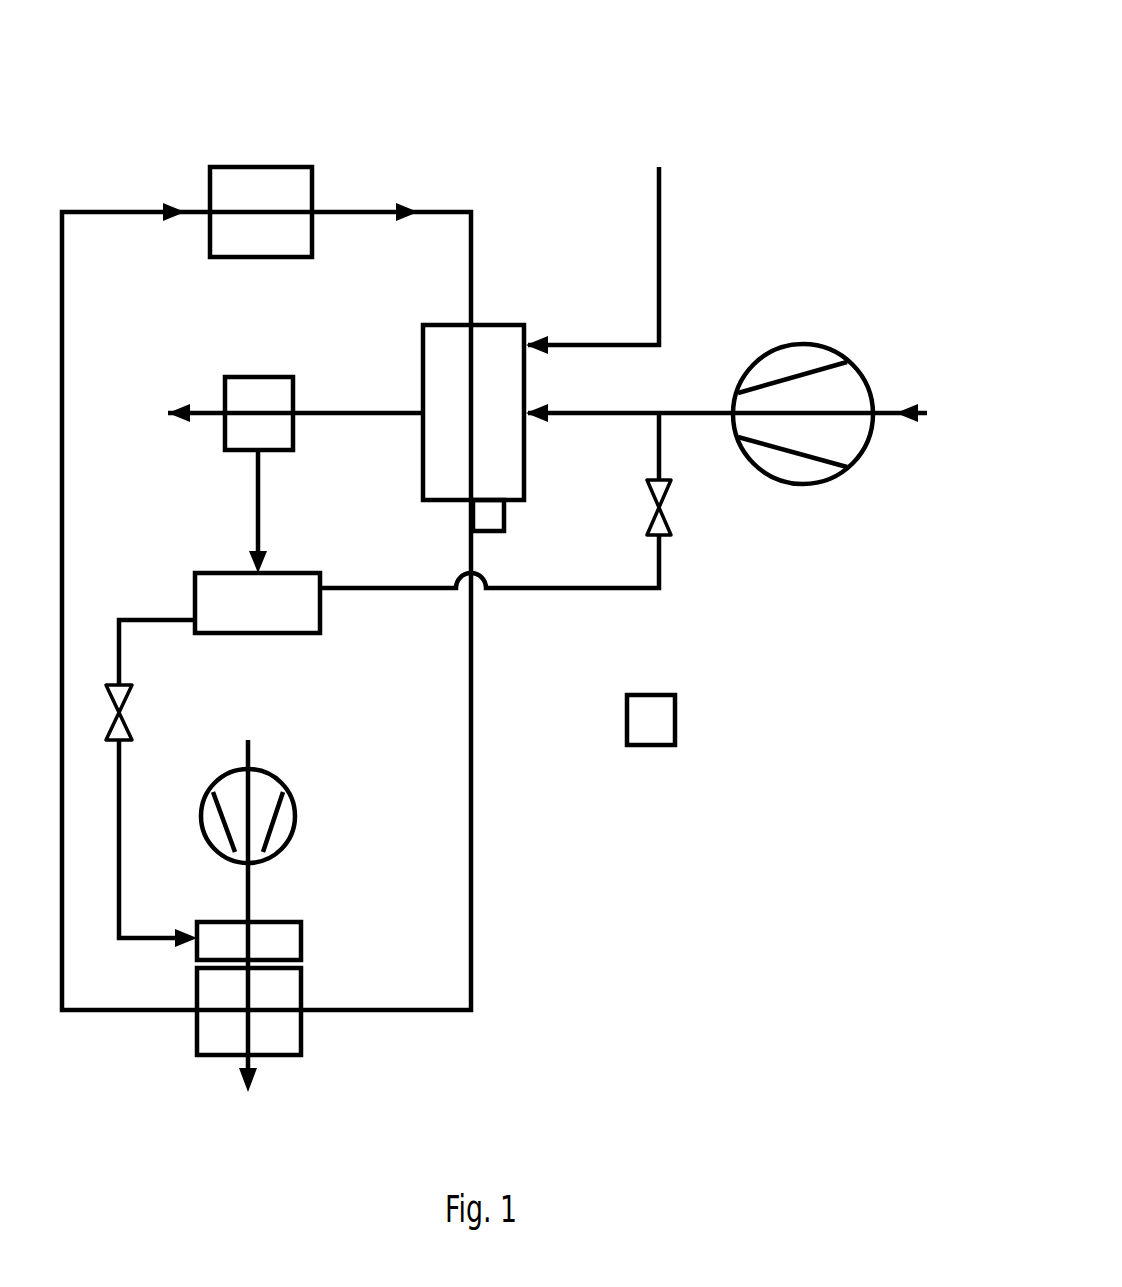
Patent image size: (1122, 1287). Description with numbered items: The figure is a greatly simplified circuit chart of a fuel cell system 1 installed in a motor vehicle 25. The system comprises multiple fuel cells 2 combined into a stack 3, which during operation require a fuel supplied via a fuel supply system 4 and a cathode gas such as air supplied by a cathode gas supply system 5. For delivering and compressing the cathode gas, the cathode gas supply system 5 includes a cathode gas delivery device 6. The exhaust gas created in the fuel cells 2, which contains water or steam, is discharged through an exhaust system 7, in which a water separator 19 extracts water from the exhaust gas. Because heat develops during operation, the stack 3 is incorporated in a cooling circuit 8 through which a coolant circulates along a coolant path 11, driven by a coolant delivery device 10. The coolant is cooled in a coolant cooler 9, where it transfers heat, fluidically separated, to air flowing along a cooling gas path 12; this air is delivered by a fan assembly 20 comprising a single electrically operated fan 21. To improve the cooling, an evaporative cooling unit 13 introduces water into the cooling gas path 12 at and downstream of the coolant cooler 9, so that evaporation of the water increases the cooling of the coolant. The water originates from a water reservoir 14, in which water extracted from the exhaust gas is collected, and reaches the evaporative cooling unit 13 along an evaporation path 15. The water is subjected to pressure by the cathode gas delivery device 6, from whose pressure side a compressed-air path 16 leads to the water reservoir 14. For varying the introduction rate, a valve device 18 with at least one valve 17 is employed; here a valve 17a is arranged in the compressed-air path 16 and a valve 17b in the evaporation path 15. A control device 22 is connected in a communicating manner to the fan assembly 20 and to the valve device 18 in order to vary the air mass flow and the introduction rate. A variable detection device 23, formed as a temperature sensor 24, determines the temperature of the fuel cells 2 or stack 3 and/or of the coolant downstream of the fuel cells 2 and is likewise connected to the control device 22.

The fuel cell system 1 is at (730, 138).
The fuel cell 2 is at (440, 340).
The stack 3 is at (506, 316).
The fuel supply system 4 is at (662, 215).
The cathode gas supply system 5 is at (908, 398).
The cathode gas delivery device 6 is at (800, 343).
The exhaust system 7 is at (342, 402).
The cooling circuit 8 is at (482, 847).
The coolant cooler 9 is at (303, 1033).
The coolant delivery device 10 is at (260, 165).
The coolant path 11 is at (473, 790).
The cooling gas path 12 is at (250, 890).
The evaporative cooling unit 13 is at (303, 938).
The water reservoir 14 is at (288, 573).
The evaporation path 15 is at (121, 773).
The compressed-air path 16 is at (661, 565).
The valve 17 is at (437, 610).
The valve 17a is at (662, 507).
The valve 17b is at (133, 713).
The valve device 18 is at (704, 346).
The water separator 19 is at (258, 377).
The fan assembly 20 is at (296, 817).
The fan 21 is at (302, 816).
The control device 22 is at (675, 720).
The variable detection device 23 is at (504, 515).
The temperature sensor 24 is at (538, 513).
The motor vehicle 25 is at (857, 148).